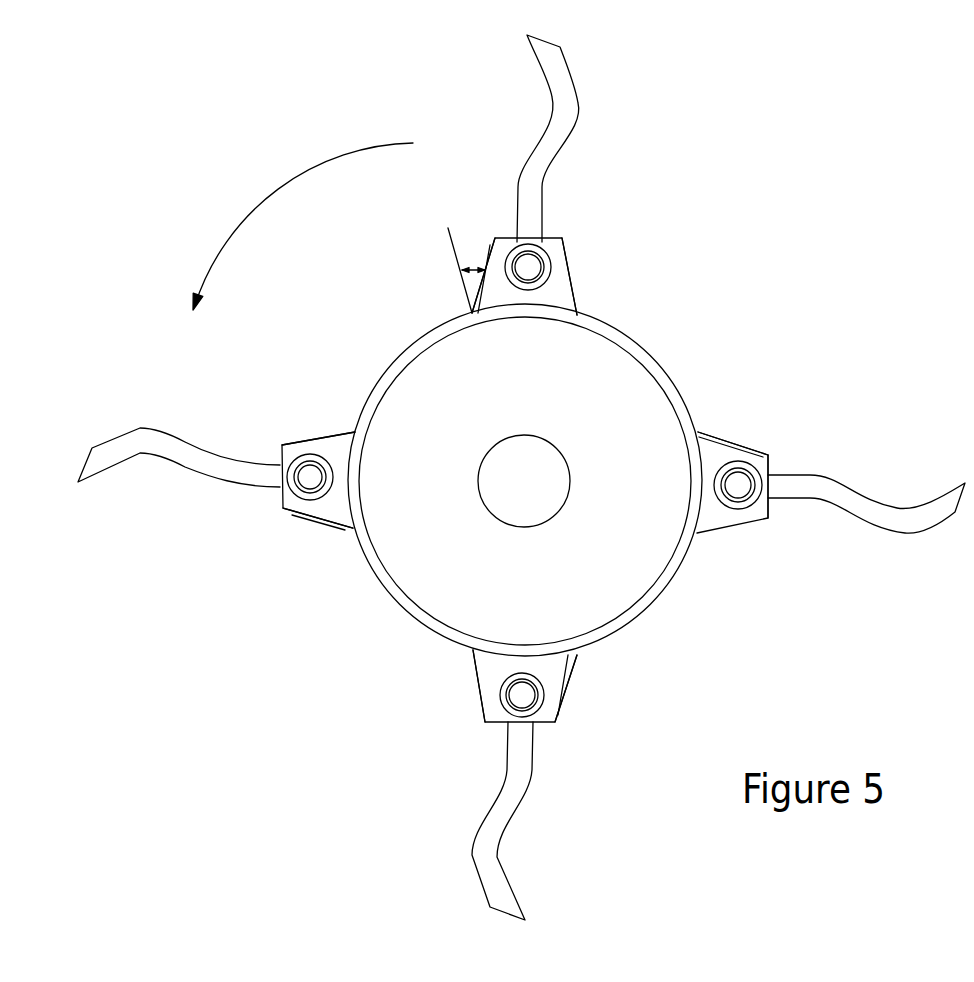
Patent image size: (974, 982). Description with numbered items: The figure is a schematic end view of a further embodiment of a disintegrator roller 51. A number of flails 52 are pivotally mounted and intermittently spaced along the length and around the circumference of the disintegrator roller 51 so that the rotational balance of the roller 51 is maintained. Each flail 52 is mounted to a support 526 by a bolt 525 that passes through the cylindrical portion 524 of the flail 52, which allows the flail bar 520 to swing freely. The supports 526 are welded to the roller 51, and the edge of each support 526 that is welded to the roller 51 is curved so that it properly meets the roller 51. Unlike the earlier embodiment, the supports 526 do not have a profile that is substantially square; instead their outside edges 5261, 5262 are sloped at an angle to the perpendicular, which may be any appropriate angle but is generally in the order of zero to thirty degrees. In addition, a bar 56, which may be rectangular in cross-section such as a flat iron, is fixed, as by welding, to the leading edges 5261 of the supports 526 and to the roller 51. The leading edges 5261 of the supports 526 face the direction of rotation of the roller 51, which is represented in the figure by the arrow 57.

The disintegrator roller 51 is at (668, 375).
The flail 52 is at (624, 156).
The flail bar 520 is at (568, 103).
The cylindrical portion 524 is at (545, 265).
The bolt 525 is at (528, 267).
The support 526 is at (560, 303).
The leading edge 5261 is at (492, 238).
The outside edge 5262 is at (572, 288).
The bar 56 is at (470, 297).
The arrow 57 is at (278, 187).